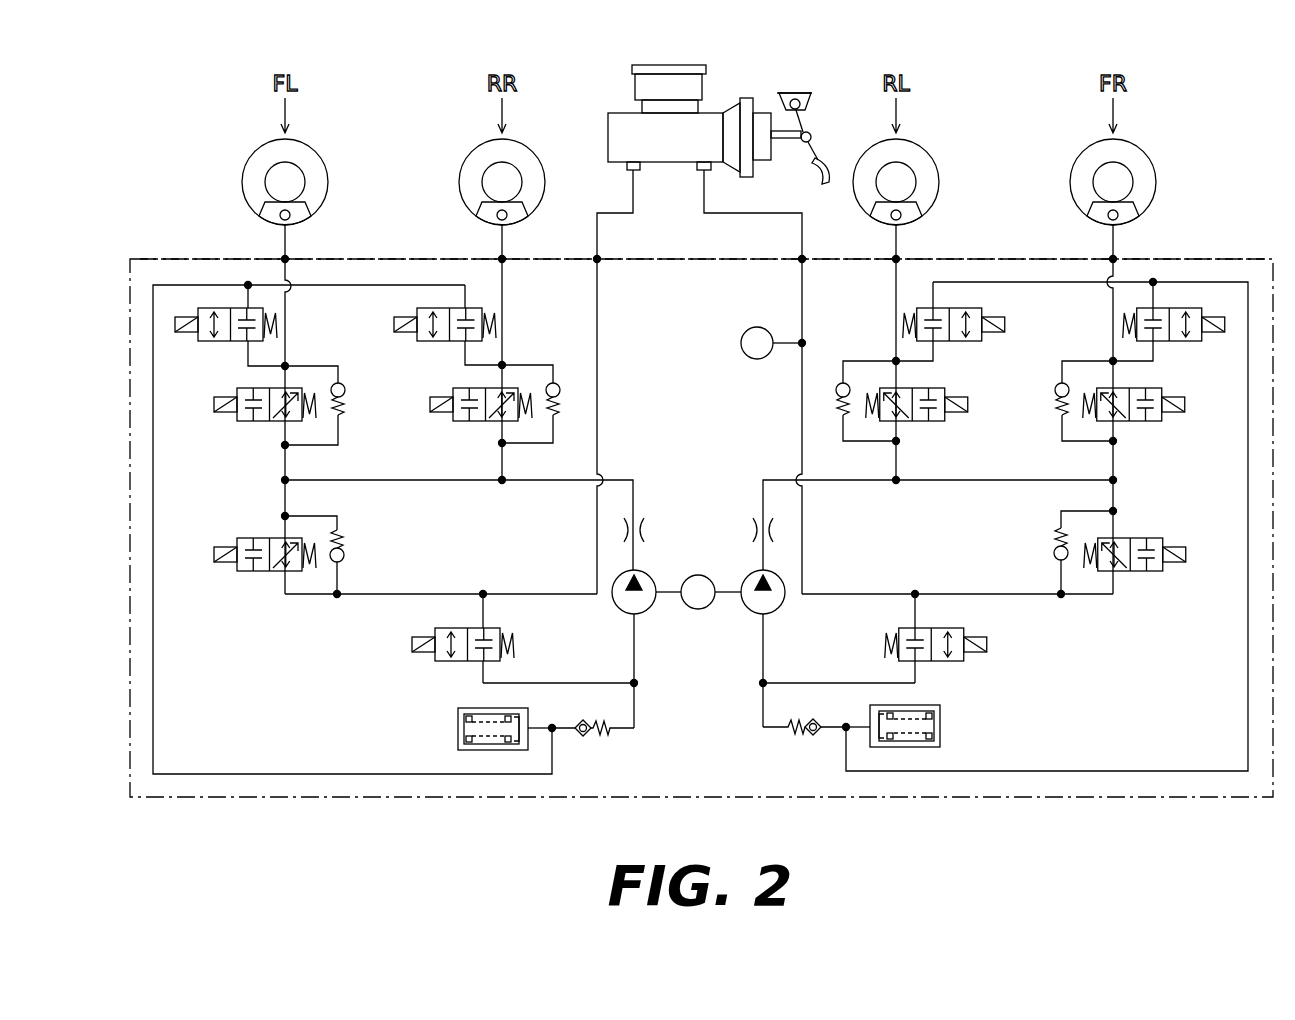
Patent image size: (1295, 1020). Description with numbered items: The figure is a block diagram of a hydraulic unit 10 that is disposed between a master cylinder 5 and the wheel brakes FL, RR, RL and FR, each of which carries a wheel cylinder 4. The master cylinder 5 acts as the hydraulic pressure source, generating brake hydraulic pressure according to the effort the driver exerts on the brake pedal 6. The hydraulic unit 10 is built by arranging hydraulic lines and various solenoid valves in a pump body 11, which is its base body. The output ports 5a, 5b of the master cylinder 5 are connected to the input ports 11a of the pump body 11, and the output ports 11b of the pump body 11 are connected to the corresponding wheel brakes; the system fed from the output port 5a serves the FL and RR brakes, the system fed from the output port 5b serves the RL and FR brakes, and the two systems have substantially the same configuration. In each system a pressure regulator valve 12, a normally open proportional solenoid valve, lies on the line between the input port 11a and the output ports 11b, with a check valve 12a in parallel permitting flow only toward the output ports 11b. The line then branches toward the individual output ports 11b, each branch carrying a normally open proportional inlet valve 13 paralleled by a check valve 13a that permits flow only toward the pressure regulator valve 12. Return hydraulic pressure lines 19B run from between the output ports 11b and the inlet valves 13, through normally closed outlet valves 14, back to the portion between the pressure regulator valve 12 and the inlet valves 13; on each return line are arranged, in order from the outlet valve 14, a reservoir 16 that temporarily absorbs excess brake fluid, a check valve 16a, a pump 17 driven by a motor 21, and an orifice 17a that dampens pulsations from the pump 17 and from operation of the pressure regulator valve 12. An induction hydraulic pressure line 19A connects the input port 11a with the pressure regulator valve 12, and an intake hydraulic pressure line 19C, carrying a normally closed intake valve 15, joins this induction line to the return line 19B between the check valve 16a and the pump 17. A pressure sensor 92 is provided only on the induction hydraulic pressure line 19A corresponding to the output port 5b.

The wheel cylinder 4 is at (280, 214).
The master cylinder 5 is at (627, 120).
The output port 5a is at (640, 173).
The output port 5b is at (712, 172).
The brake pedal 6 is at (824, 158).
The hydraulic unit 10 is at (1223, 247).
The pump body 11 is at (979, 257).
The input port 11a is at (599, 259).
The output port 11b is at (288, 259).
The pressure regulator valve 12 is at (247, 538).
The check valve 12a is at (345, 548).
The inlet valve 13 is at (250, 422).
The check valve 13a is at (345, 389).
The outlet valve 14 is at (212, 342).
The intake valve 15 is at (444, 662).
The reservoir 16 is at (440, 742).
The check valve 16a is at (592, 738).
The pump 17 is at (648, 612).
The orifice 17a is at (653, 534).
The induction hydraulic pressure line 19A is at (599, 293).
The return hydraulic pressure line 19B is at (155, 664).
The intake hydraulic pressure line 19C is at (559, 683).
The motor 21 is at (698, 609).
The pressure sensor 92 is at (741, 343).